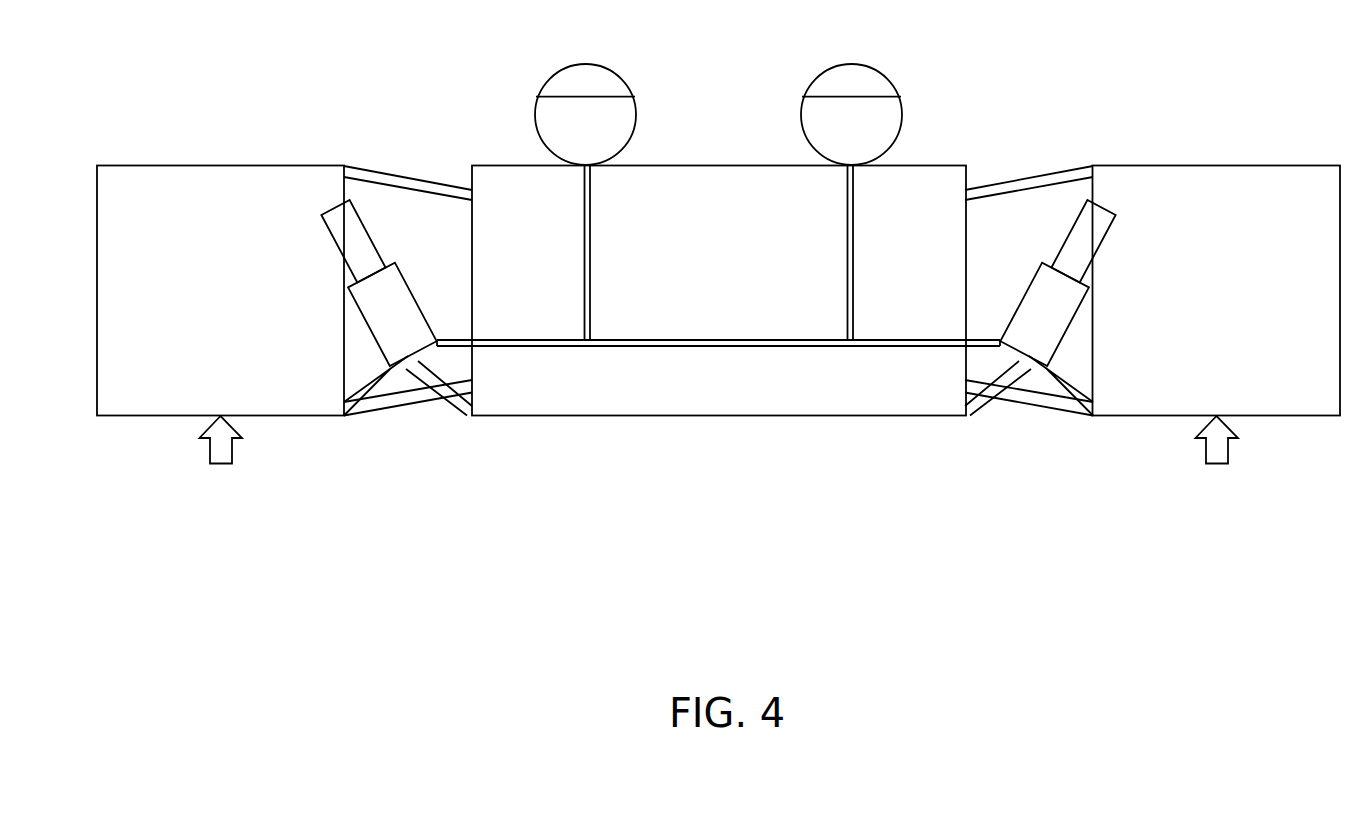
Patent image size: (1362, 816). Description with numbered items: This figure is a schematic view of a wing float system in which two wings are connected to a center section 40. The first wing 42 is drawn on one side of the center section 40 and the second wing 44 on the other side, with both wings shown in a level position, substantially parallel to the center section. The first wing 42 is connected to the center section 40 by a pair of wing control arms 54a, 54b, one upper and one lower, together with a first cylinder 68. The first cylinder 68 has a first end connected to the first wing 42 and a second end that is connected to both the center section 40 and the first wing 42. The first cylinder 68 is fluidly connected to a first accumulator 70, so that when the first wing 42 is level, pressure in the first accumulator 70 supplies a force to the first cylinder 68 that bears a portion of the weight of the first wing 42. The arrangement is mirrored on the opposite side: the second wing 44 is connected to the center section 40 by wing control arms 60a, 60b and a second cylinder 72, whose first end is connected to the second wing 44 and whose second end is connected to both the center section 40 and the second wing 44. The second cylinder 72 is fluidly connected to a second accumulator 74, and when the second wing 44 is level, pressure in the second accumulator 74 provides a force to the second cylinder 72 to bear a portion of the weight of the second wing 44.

The center section 40 is at (718, 291).
The first wing 42 is at (220, 291).
The second wing 44 is at (1217, 291).
The wing control arm 54a is at (418, 403).
The wing control arm 54b is at (423, 180).
The wing control arm 60a is at (1019, 403).
The wing control arm 60b is at (1014, 180).
The first cylinder 68 is at (378, 325).
The first accumulator 70 is at (550, 80).
The second cylinder 72 is at (1059, 325).
The second accumulator 74 is at (887, 80).